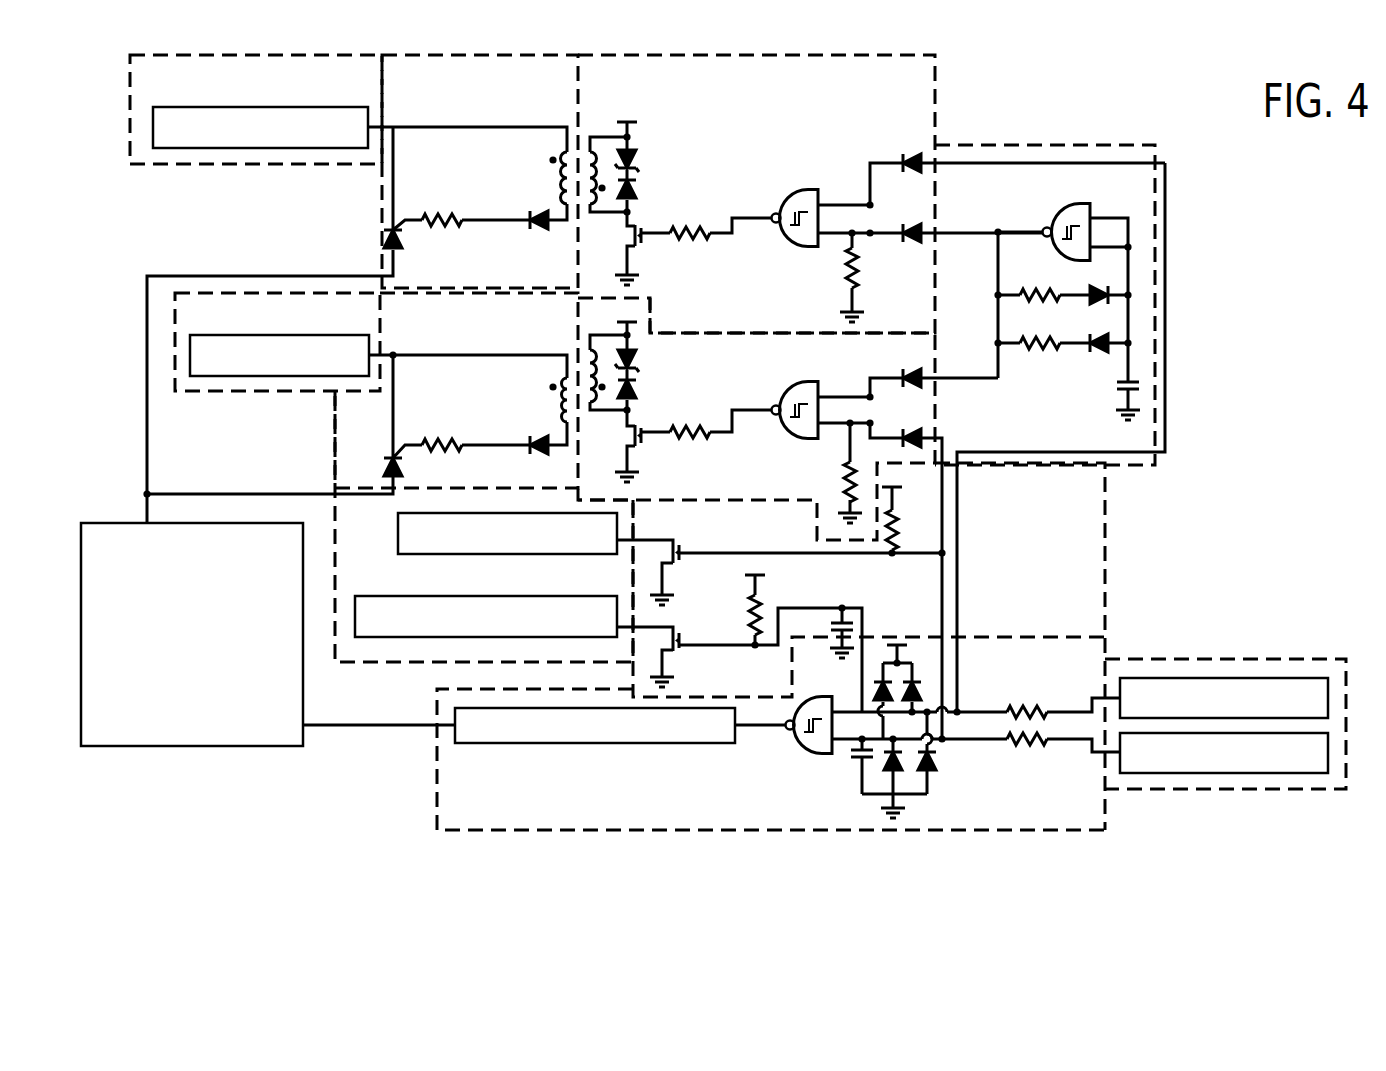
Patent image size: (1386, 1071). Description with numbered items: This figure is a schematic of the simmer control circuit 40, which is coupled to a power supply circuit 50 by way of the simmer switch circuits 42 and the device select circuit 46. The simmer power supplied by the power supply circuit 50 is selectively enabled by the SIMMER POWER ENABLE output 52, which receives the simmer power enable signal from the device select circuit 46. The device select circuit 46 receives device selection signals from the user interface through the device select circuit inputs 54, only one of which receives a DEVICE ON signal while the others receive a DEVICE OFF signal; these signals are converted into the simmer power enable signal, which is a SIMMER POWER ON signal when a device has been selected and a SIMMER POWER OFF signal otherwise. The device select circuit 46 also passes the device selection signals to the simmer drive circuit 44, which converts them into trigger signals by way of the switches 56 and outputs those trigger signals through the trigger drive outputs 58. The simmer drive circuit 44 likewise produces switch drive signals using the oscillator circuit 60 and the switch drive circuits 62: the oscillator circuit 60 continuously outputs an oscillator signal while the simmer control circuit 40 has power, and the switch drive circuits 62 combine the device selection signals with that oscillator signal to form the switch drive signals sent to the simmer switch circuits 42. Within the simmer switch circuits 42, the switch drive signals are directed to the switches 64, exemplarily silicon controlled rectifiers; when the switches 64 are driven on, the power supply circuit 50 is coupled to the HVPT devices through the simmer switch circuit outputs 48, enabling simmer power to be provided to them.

The simmer control circuit 40 is at (1140, 62).
The simmer switch circuits 42 is at (457, 53).
The simmer drive circuit 44 is at (1160, 207).
The device select circuit 46 is at (437, 775).
The simmer switch circuit outputs 48 is at (130, 121).
The power supply circuit 50 is at (125, 522).
The SIMMER POWER ENABLE output 52 is at (525, 745).
The device select circuit inputs 54 is at (1184, 659).
The switches 56 is at (681, 640).
The trigger drive outputs 58 is at (335, 620).
The oscillator circuit 60 is at (980, 465).
The switch drive circuits 62 is at (840, 53).
The switches 64 is at (388, 240).